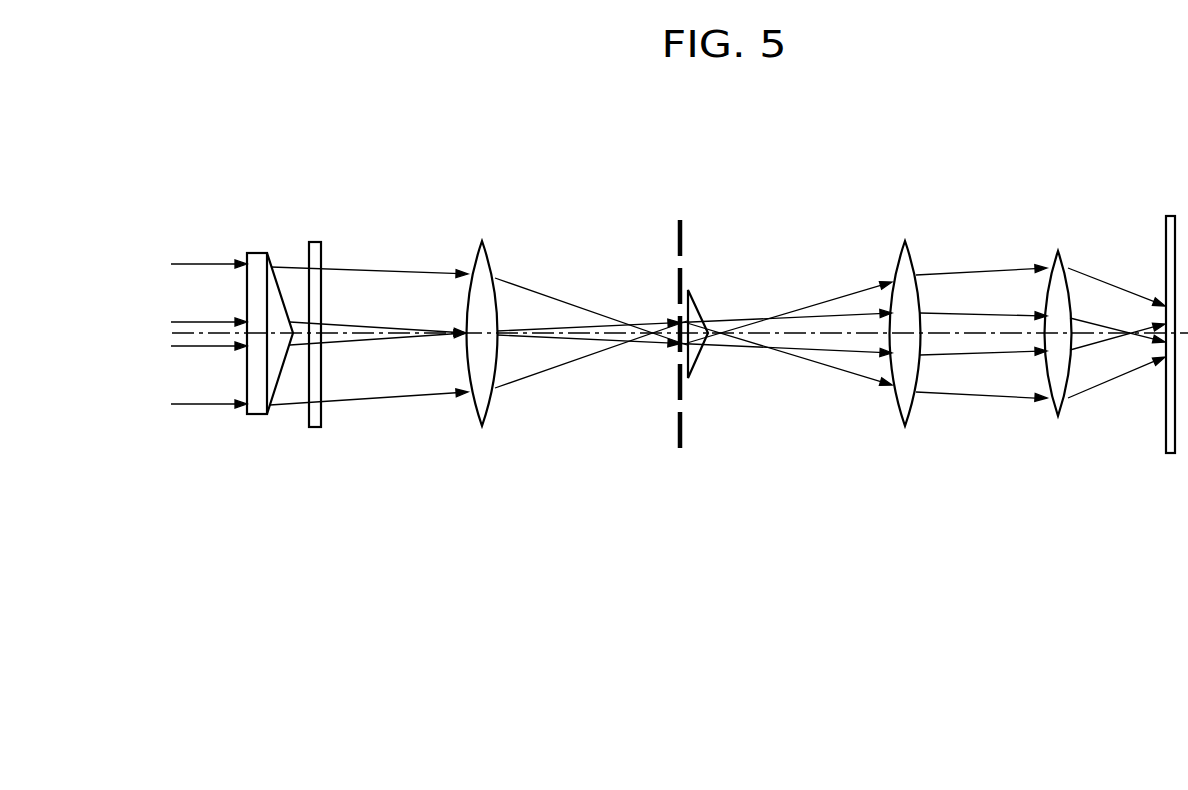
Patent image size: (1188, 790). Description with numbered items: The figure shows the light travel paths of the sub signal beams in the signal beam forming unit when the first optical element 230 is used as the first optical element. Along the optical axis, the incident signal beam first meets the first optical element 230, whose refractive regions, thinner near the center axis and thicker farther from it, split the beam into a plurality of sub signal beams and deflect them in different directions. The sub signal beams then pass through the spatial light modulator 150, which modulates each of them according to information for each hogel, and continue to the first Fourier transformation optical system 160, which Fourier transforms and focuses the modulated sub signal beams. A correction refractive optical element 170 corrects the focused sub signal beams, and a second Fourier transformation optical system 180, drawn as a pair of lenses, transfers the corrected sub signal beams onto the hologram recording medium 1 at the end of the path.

The first optical element 230 is at (272, 267).
The spatial light modulator 150 is at (313, 247).
The first Fourier transformation optical system 160 is at (485, 247).
The correction refractive optical element 170 is at (697, 308).
The second Fourier transformation optical system 180 is at (897, 234).
The hologram recording medium 1 is at (1170, 214).